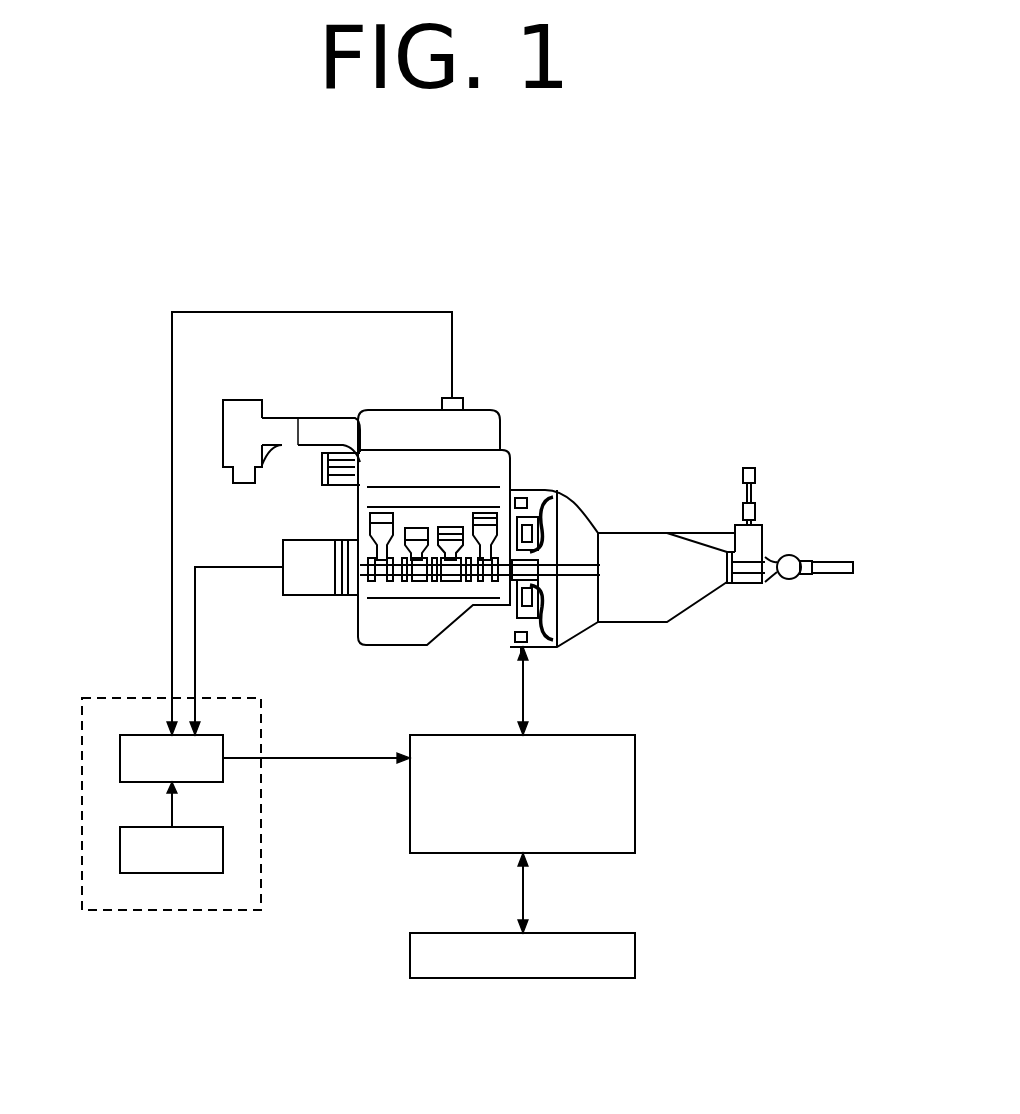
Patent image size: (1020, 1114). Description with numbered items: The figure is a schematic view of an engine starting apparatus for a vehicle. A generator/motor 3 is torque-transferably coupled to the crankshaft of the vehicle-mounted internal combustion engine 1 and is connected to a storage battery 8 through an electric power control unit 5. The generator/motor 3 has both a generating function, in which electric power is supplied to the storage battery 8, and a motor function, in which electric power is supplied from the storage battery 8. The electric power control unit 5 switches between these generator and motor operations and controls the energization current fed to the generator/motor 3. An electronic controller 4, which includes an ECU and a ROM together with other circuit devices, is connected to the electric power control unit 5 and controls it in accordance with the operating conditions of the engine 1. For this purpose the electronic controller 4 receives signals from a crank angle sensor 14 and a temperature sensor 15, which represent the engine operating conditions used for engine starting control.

The internal combustion engine 1 is at (402, 465).
The generator/motor 3 is at (520, 492).
The electronic controller 4 is at (261, 862).
The electric power control unit 5 is at (635, 797).
The storage battery 8 is at (635, 952).
The crank angle sensor 14 is at (315, 595).
The temperature sensor 15 is at (455, 397).